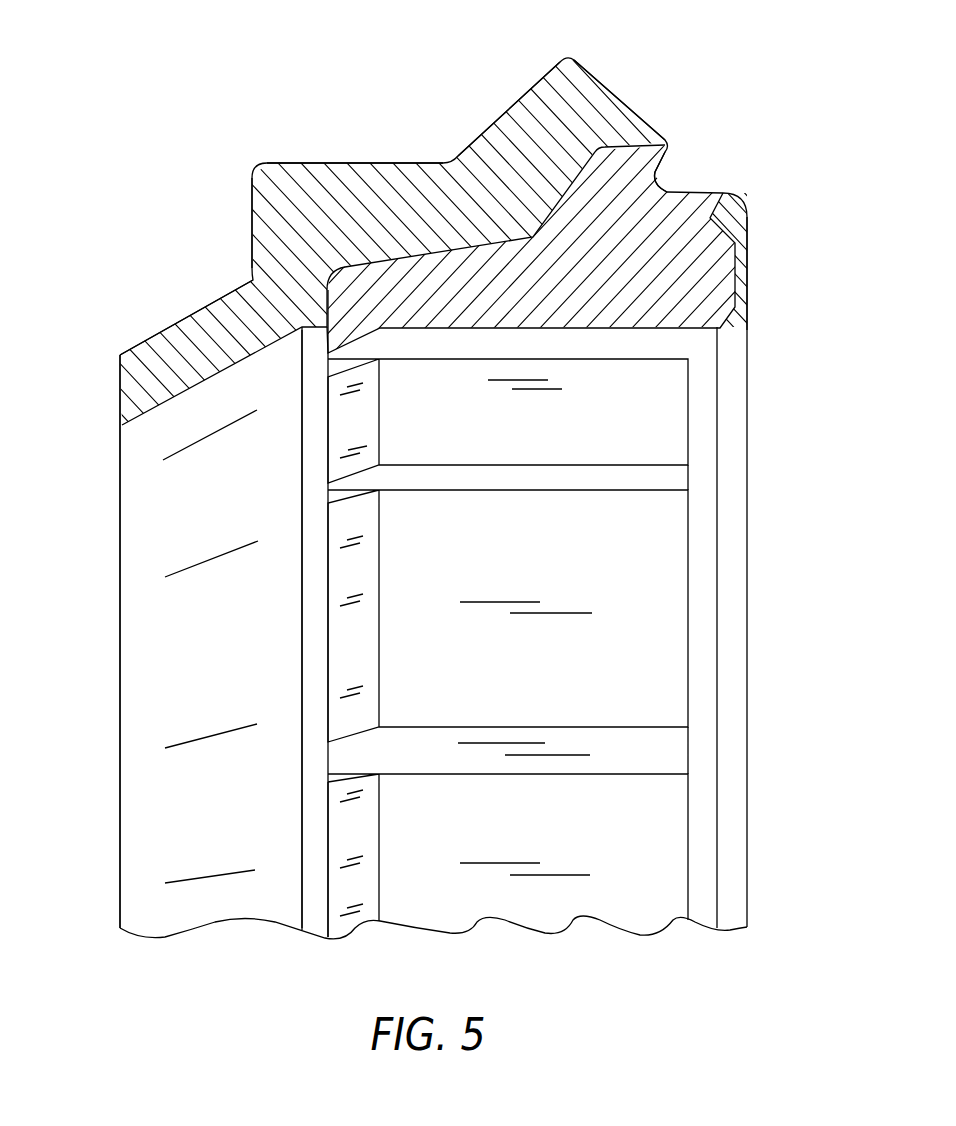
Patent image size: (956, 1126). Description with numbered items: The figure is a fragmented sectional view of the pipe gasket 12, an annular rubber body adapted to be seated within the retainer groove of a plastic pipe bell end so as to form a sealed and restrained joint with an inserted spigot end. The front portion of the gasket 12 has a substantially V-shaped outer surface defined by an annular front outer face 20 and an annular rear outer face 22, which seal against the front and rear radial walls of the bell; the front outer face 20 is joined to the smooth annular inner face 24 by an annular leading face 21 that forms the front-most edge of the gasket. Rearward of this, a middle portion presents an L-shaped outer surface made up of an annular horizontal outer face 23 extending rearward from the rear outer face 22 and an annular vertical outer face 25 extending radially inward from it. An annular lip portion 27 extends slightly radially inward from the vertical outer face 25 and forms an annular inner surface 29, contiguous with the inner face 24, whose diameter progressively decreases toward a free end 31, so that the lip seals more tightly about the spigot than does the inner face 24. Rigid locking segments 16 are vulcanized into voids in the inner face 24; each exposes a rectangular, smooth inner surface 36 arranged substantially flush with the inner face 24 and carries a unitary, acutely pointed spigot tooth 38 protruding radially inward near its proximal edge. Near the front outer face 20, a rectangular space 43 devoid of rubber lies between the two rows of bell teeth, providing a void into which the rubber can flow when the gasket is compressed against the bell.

The gasket 12 is at (262, 97).
The locking segments 16 is at (698, 412).
The front outer face 20 is at (629, 106).
The leading face 21 is at (748, 255).
The rear outer face 22 is at (514, 104).
The horizontal outer face 23 is at (340, 162).
The inner face 24 is at (663, 342).
The vertical outer face 25 is at (253, 222).
The lip portion 27 is at (155, 332).
The inner surface 29 is at (167, 410).
The free end 31 is at (120, 393).
The inner surface 36 is at (526, 627).
The spigot tooth 38 is at (351, 649).
The space 43 is at (686, 176).